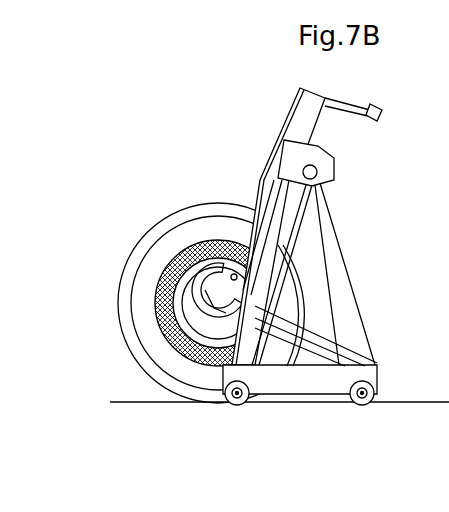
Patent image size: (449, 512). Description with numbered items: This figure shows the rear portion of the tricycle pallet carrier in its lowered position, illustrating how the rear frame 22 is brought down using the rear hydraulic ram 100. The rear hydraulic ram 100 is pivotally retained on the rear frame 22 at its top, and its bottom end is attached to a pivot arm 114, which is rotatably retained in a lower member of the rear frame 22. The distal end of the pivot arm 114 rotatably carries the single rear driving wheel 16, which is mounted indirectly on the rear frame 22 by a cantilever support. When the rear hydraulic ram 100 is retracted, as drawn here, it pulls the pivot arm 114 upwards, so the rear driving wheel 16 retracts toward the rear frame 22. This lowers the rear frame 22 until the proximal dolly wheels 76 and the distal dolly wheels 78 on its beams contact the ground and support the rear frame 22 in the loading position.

The rear hydraulic ram 100 is at (290, 107).
The rear frame 22 is at (162, 133).
The rear driving wheel 16 is at (133, 253).
The pivot arm 114 is at (310, 366).
The proximal dolly wheels 76 is at (232, 404).
The distal dolly wheels 78 is at (358, 404).